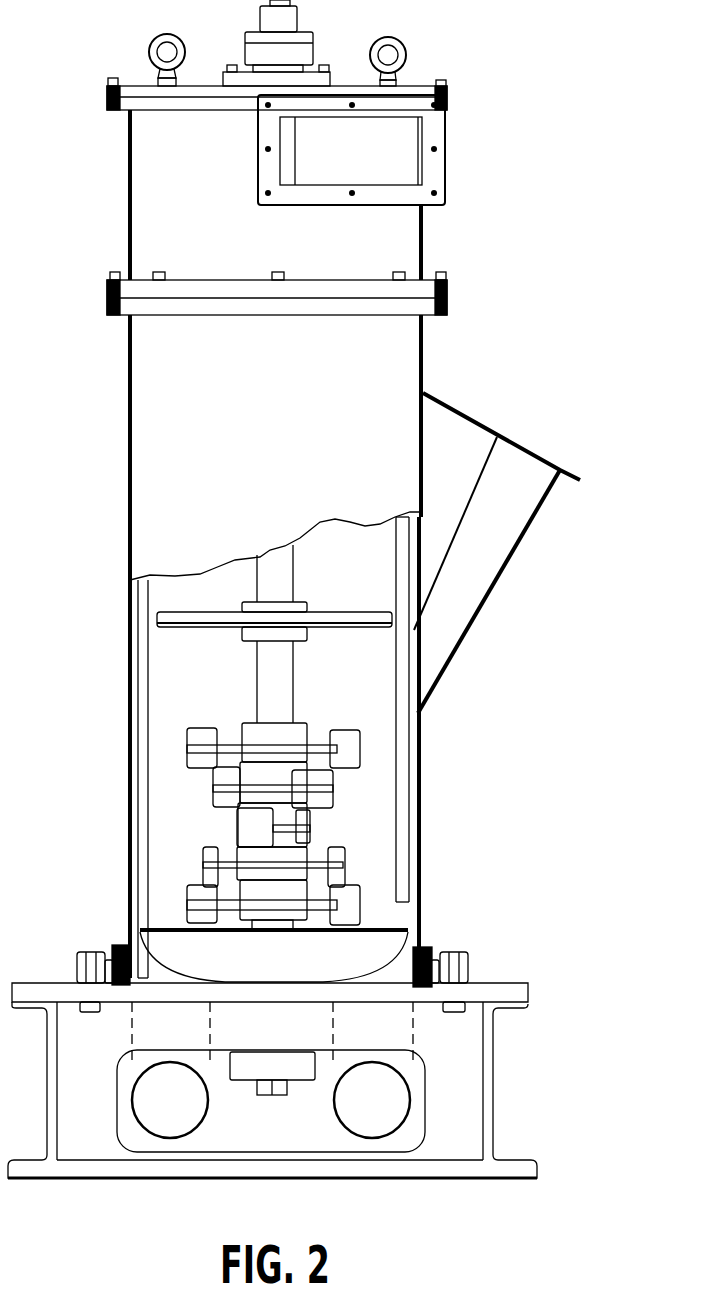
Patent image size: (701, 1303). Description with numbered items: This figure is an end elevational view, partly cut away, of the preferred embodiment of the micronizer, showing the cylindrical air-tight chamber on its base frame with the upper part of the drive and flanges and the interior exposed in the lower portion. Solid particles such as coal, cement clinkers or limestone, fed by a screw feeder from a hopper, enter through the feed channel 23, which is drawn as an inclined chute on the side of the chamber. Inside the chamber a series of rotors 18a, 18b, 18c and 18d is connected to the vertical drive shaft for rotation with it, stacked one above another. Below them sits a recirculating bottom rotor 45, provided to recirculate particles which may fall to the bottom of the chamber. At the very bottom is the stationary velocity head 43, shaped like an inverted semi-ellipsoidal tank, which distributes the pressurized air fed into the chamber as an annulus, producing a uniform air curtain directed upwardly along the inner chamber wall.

The feed channel 23 is at (513, 548).
The rotor 18a is at (355, 748).
The rotor 18b is at (323, 800).
The rotor 18c is at (247, 825).
The fourth agitator arm 18d is at (340, 873).
The recirculating bottom rotor 45 is at (198, 892).
The stationary velocity head 43 is at (353, 947).